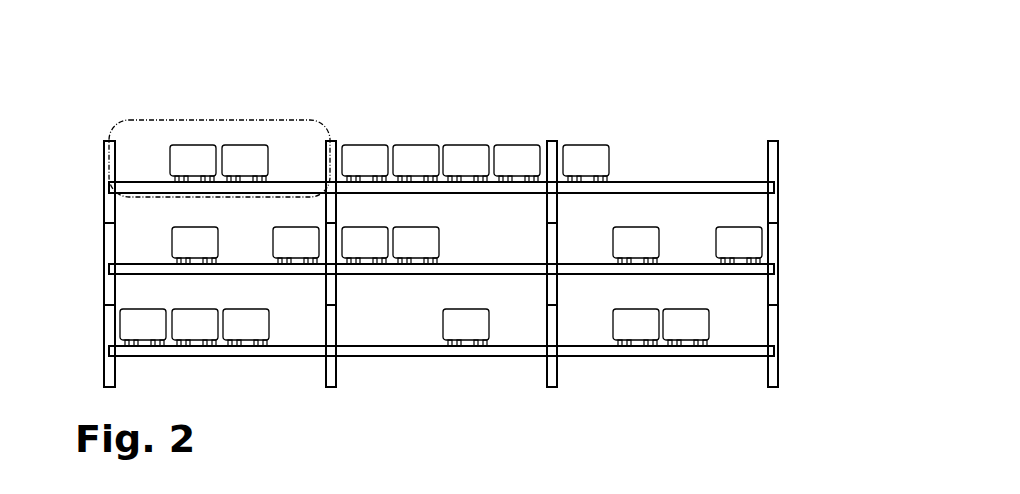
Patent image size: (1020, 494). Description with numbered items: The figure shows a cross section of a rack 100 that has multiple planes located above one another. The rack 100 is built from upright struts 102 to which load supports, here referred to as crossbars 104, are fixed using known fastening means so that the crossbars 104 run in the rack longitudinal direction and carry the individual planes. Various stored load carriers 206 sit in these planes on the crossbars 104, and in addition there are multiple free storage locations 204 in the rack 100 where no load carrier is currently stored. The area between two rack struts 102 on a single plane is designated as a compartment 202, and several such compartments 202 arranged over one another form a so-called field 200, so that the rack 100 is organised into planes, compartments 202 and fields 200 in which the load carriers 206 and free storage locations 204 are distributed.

The rack 100 is at (720, 64).
The strut 102 is at (774, 167).
The crossbar 104 is at (740, 187).
The field 200 is at (767, 414).
The compartment 202 is at (113, 136).
The free storage location 204 is at (687, 240).
The load carrier 206 is at (587, 155).